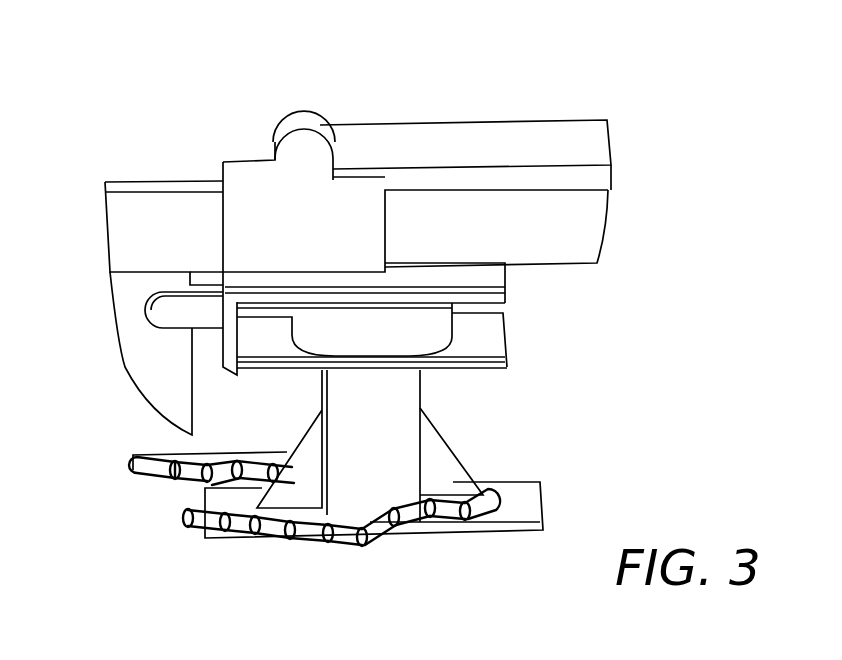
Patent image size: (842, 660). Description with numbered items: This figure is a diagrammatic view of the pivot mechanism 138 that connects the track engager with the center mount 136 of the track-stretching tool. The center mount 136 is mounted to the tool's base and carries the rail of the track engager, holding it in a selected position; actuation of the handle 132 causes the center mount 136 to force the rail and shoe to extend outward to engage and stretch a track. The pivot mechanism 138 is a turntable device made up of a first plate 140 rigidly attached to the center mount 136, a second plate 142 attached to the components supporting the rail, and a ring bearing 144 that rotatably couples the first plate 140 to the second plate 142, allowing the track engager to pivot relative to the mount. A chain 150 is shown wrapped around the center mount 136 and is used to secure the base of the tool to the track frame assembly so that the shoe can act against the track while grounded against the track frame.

The handle 132 is at (565, 145).
The center mount 136 is at (162, 207).
The pivot mechanism 138 is at (472, 316).
The first plate 140 is at (497, 358).
The second plate 142 is at (500, 283).
The ring bearing 144 is at (435, 317).
The chain 150 is at (204, 531).